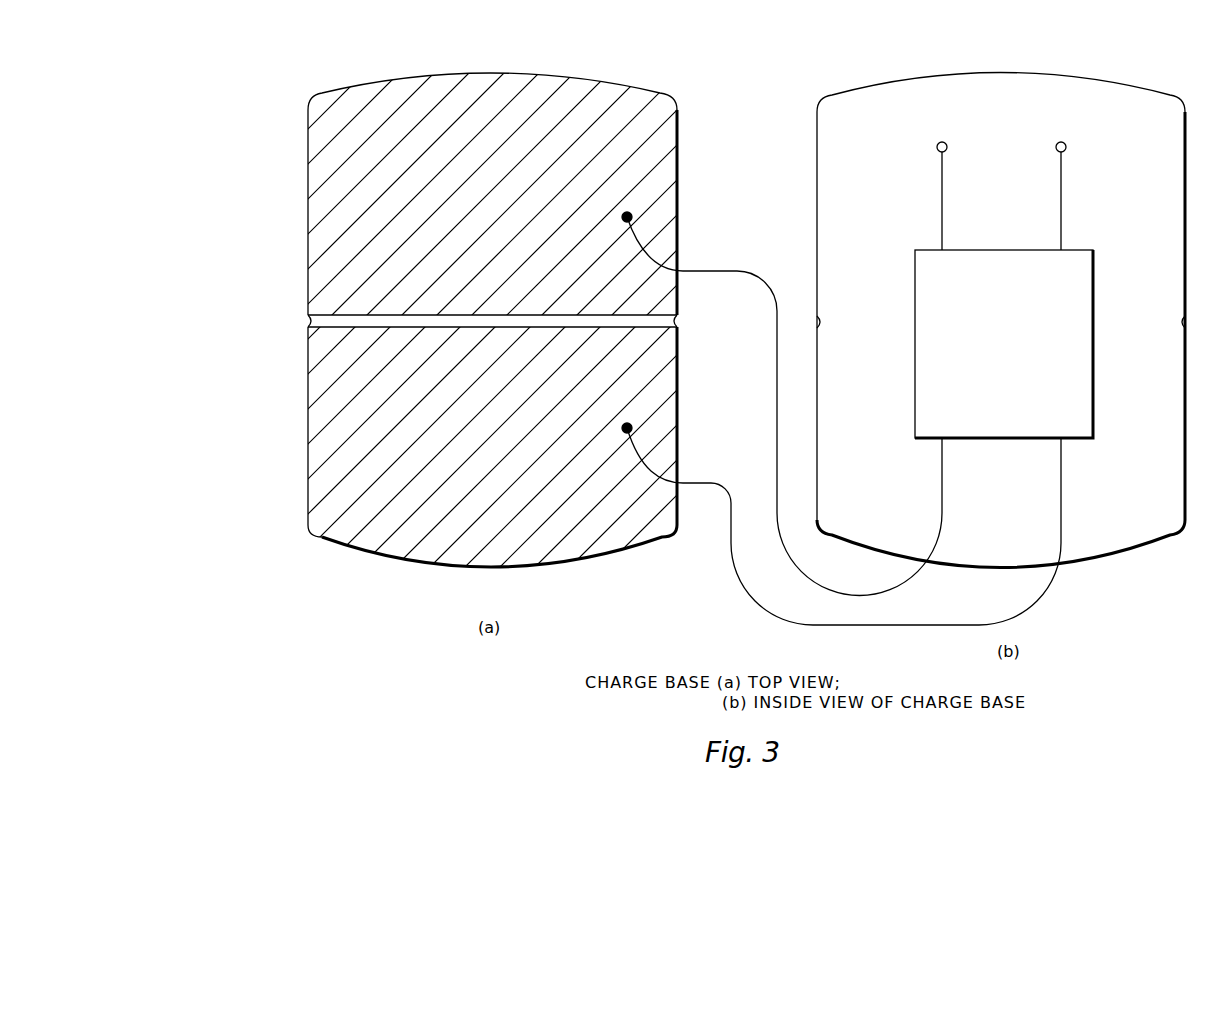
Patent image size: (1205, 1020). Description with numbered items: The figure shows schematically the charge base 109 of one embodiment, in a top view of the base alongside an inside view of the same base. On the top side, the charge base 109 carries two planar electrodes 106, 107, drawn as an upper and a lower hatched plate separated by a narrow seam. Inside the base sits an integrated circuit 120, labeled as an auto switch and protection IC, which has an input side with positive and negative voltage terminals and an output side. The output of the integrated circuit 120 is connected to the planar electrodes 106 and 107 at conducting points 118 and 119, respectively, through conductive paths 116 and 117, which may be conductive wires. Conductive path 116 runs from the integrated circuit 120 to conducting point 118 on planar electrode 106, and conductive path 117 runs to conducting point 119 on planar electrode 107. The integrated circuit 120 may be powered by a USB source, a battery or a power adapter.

The planar electrode 106 is at (308, 428).
The planar electrode 107 is at (308, 218).
The charge base 109 is at (1092, 24).
The conductive path 116 is at (1030, 602).
The conductive path 117 is at (898, 587).
The conducting point 118 is at (622, 428).
The conducting point 119 is at (622, 214).
The integrated circuit 120 is at (1078, 250).